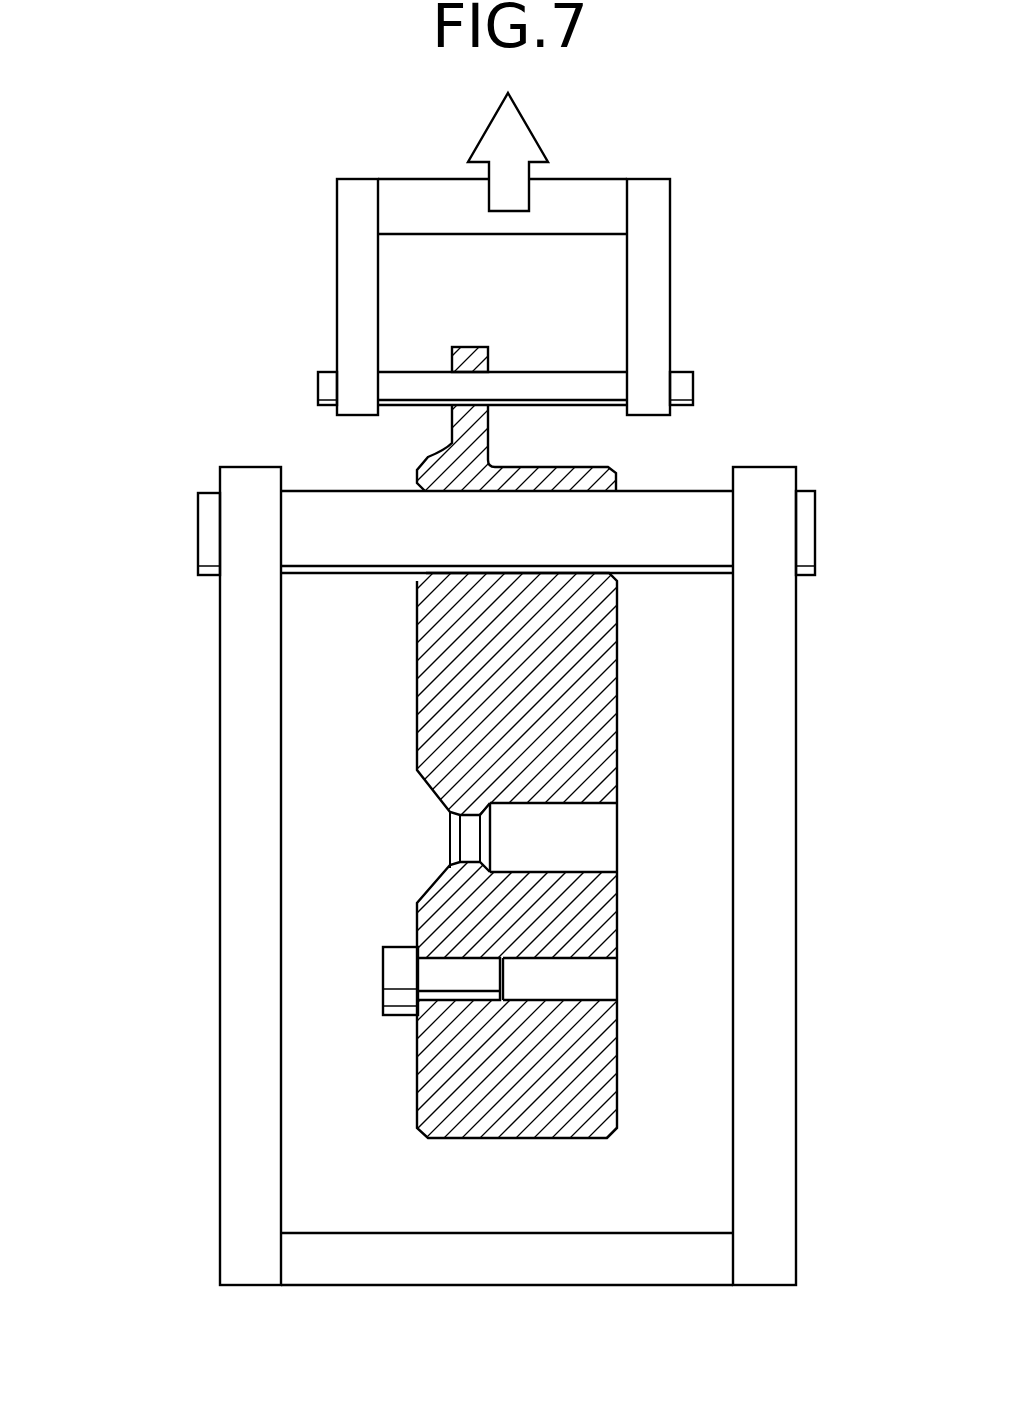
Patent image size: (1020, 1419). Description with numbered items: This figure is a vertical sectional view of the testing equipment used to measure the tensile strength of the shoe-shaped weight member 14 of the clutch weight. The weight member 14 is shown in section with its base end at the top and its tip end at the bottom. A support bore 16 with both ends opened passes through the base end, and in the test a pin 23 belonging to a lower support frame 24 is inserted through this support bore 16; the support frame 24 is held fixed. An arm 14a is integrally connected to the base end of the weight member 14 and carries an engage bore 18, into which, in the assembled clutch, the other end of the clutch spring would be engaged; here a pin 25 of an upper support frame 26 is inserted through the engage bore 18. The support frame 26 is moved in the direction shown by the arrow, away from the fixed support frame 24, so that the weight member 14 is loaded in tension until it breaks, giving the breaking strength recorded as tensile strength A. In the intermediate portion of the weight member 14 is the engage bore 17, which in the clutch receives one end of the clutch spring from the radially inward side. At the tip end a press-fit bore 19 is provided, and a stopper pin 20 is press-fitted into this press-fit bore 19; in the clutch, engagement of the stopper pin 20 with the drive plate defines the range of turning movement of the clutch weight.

The weight member 14 is at (510, 772).
The arm 14a is at (460, 355).
The support bore 16 is at (548, 563).
The engage bore 17 is at (473, 822).
The engage bore 18 is at (473, 373).
The press-fit bore 19 is at (585, 957).
The stopper pin 20 is at (383, 990).
The pin 23 is at (687, 518).
The support frame 24 is at (242, 777).
The pin 25 is at (415, 388).
The support frame 26 is at (655, 252).